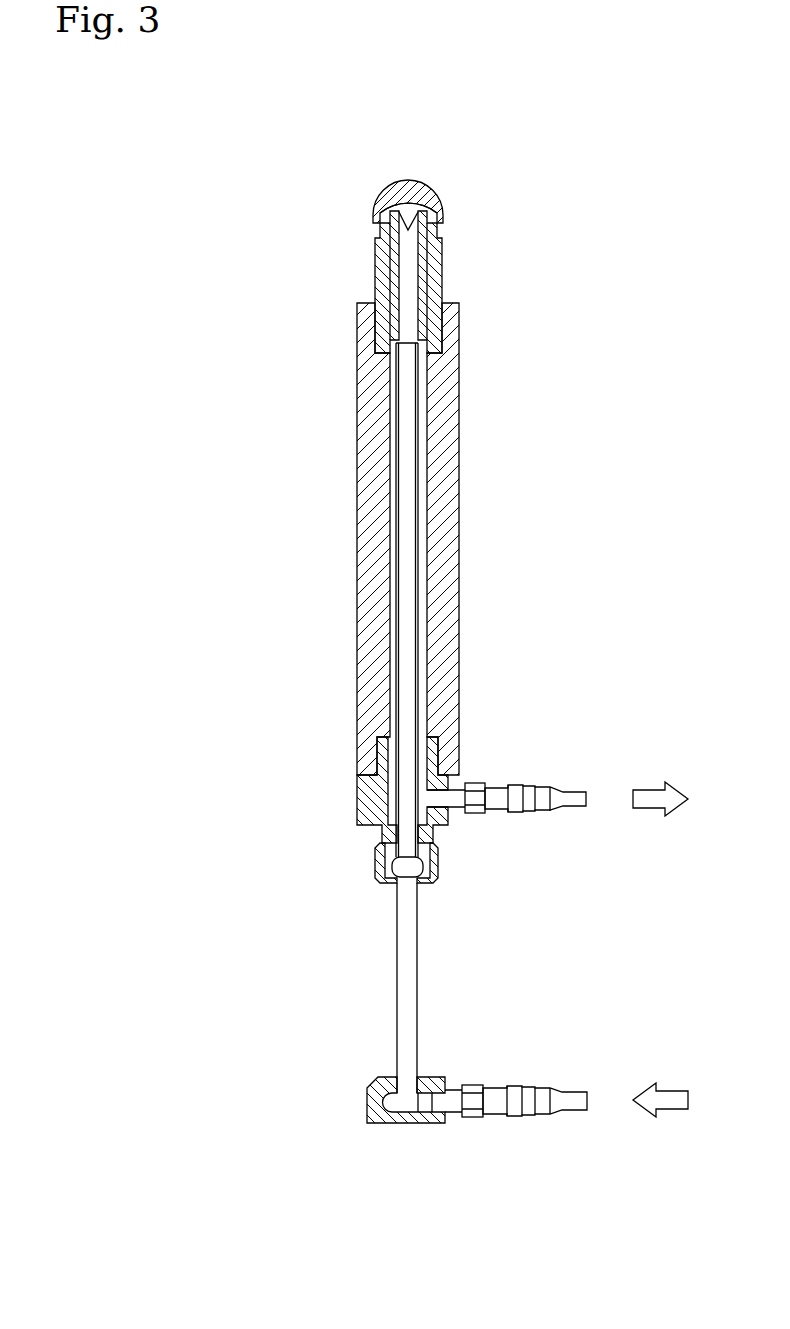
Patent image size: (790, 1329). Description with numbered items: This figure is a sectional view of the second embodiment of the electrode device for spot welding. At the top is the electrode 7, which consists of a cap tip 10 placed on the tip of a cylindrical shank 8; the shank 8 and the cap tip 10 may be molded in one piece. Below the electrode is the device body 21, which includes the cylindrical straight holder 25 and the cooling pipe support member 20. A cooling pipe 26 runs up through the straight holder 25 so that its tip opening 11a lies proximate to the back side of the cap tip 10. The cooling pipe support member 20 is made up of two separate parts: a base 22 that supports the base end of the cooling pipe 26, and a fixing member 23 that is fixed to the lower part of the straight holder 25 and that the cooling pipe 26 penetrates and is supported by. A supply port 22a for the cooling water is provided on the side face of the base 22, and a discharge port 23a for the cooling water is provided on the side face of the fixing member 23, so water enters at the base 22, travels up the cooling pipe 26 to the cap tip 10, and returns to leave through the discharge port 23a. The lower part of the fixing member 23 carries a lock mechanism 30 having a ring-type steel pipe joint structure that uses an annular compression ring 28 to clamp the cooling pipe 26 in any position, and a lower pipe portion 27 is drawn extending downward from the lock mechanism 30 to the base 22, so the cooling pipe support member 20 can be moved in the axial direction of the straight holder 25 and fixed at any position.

The electrode 7 is at (452, 237).
The shank 8 is at (375, 278).
The cap tip 10 is at (425, 178).
The tip opening 11a is at (377, 210).
The cooling pipe support member 20 is at (350, 797).
The device body 21 is at (350, 452).
The base 22 is at (367, 1100).
The supply port 22a is at (437, 1102).
The fixing member 23 is at (450, 820).
The discharge port 23a is at (448, 798).
The straight holder 25 is at (373, 597).
The cooling pipe 26 is at (407, 518).
The supply tube 27 is at (438, 862).
The annular compression ring 28 is at (407, 872).
The lock mechanism 30 is at (368, 860).